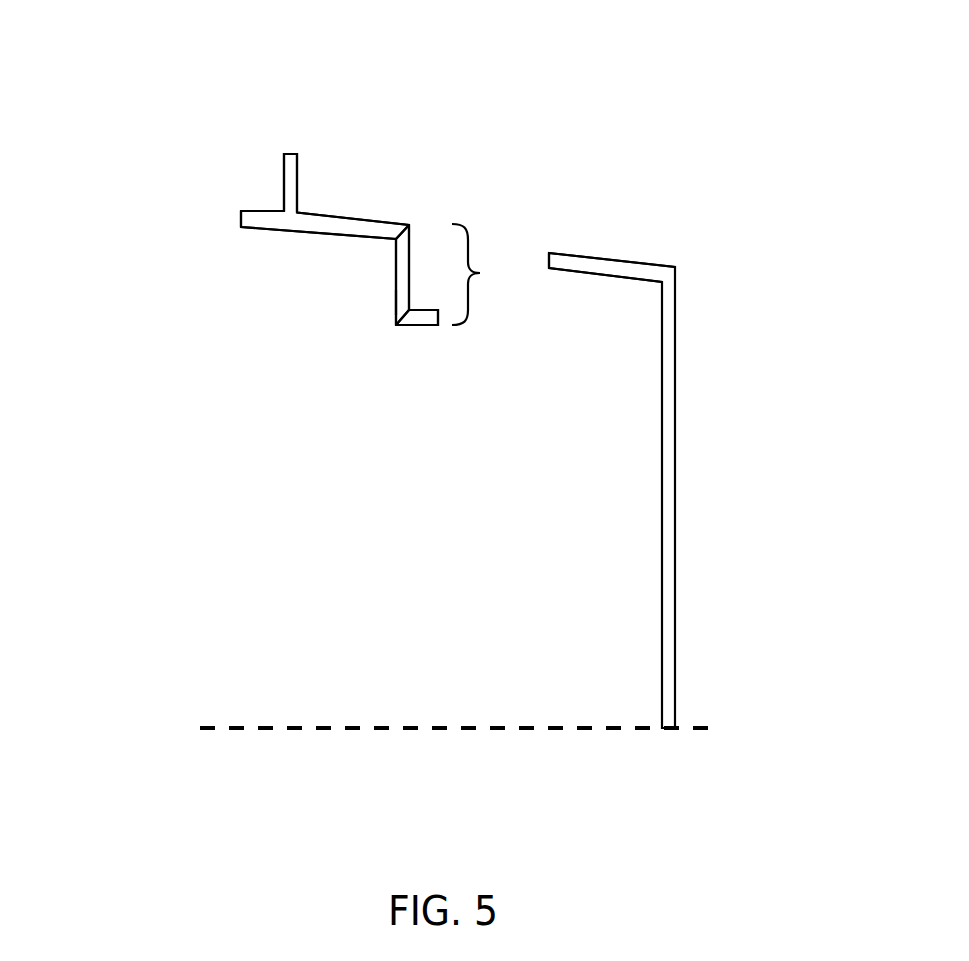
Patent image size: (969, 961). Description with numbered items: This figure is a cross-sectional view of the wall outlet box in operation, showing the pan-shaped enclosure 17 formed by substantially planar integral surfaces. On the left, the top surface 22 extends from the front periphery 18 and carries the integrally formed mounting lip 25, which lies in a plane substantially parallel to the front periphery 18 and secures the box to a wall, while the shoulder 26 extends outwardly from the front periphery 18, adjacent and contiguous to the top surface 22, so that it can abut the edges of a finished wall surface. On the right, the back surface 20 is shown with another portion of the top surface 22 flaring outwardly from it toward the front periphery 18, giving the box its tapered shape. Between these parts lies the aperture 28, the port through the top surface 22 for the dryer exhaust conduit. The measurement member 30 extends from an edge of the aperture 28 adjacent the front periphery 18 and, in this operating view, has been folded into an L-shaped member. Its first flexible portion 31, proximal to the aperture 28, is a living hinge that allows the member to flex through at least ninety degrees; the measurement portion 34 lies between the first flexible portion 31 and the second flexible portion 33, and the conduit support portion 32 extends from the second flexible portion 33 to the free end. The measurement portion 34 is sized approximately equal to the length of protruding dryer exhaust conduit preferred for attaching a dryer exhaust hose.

The pan-shaped enclosure 17 is at (227, 657).
The front periphery 18 is at (227, 210).
The back surface 20 is at (703, 425).
The top surface 22 is at (340, 195).
The mounting lip 25 is at (268, 138).
The shoulder 26 is at (242, 195).
The aperture 28 is at (508, 223).
The measurement member 30 is at (482, 282).
The first flexible portion 31 is at (410, 208).
The conduit support portion 32 is at (418, 326).
The second flexible portion 33 is at (395, 326).
The measurement portion 34 is at (396, 302).